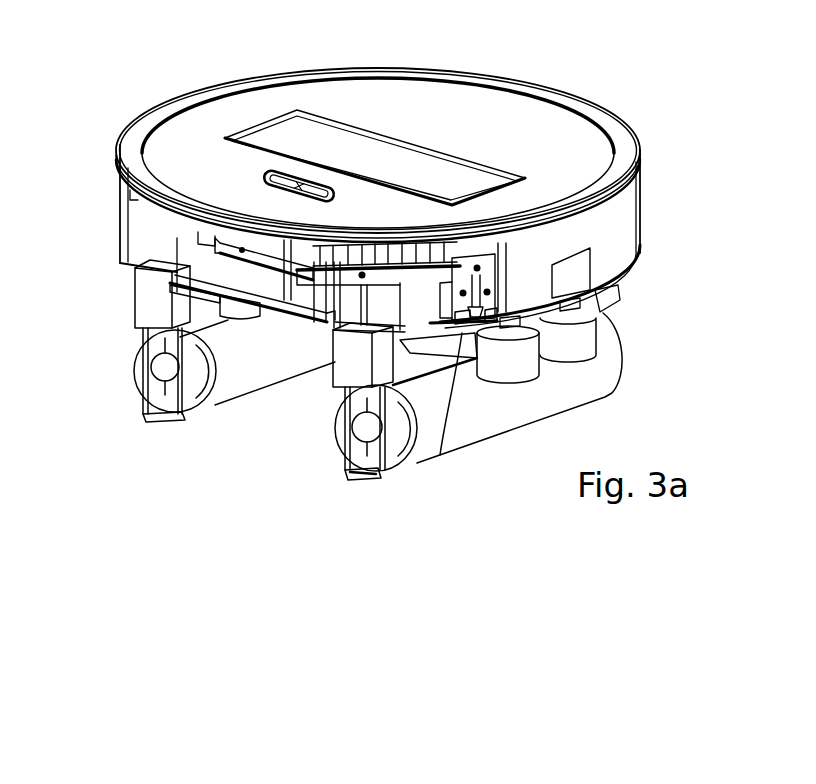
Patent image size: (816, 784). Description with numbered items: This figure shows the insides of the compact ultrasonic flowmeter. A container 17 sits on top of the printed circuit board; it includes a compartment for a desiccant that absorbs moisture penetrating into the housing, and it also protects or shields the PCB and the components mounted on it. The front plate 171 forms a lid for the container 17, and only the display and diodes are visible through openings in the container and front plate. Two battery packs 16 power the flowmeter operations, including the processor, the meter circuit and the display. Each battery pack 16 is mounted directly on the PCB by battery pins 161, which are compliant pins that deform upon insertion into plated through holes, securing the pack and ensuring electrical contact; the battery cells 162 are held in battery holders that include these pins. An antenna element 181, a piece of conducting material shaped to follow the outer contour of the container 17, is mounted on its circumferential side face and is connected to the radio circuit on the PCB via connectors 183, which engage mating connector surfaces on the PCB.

The battery pack 16 is at (158, 295).
The container 17 is at (623, 228).
The battery pin 161 is at (363, 465).
The battery cell 162 is at (602, 375).
The front plate 171 is at (577, 127).
The antenna element 181 is at (276, 255).
The connector 183 is at (475, 324).